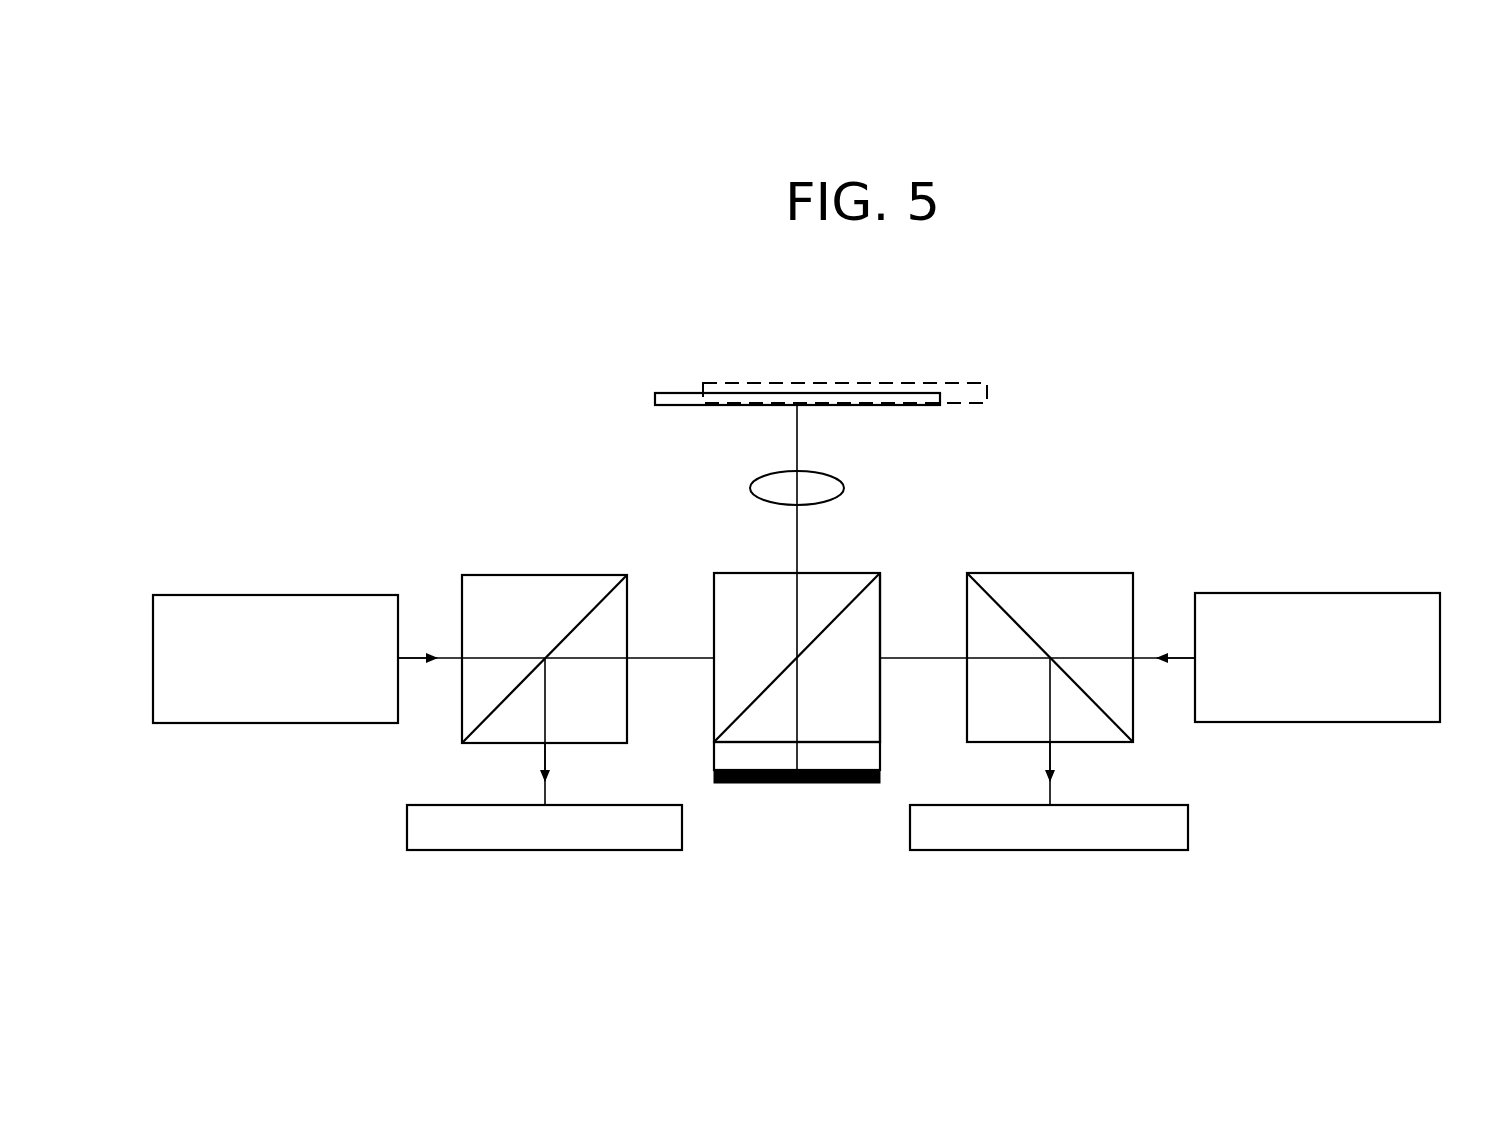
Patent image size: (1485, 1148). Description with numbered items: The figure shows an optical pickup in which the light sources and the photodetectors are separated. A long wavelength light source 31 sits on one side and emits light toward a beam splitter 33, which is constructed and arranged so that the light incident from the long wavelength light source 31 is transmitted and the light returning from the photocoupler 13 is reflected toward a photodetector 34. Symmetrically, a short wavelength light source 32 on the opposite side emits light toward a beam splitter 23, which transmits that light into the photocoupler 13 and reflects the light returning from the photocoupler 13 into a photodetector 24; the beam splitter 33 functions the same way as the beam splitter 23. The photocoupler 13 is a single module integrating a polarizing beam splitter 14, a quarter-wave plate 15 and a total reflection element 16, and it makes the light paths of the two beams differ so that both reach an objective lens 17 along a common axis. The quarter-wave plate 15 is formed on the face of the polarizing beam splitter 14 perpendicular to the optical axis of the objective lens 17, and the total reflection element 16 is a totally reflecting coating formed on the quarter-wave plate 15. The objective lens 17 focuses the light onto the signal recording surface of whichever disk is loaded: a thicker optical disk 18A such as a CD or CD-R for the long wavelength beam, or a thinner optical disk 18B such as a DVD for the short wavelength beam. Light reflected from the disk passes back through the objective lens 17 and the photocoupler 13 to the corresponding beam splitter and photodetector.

The photocoupler 13 is at (708, 612).
The polarizing beam splitter 14 is at (882, 625).
The quarter-wave plate 15 is at (882, 755).
The total reflection element 16 is at (712, 777).
The objective lens 17 is at (843, 492).
The optical disk 18A is at (912, 383).
The optical disk 18B is at (835, 407).
The beam splitter 23 is at (1050, 573).
The photodetector 24 is at (1190, 828).
The long wavelength light source 31 is at (250, 594).
The short wavelength light source 32 is at (1318, 593).
The beam splitter 33 is at (545, 573).
The photodetector 34 is at (405, 826).